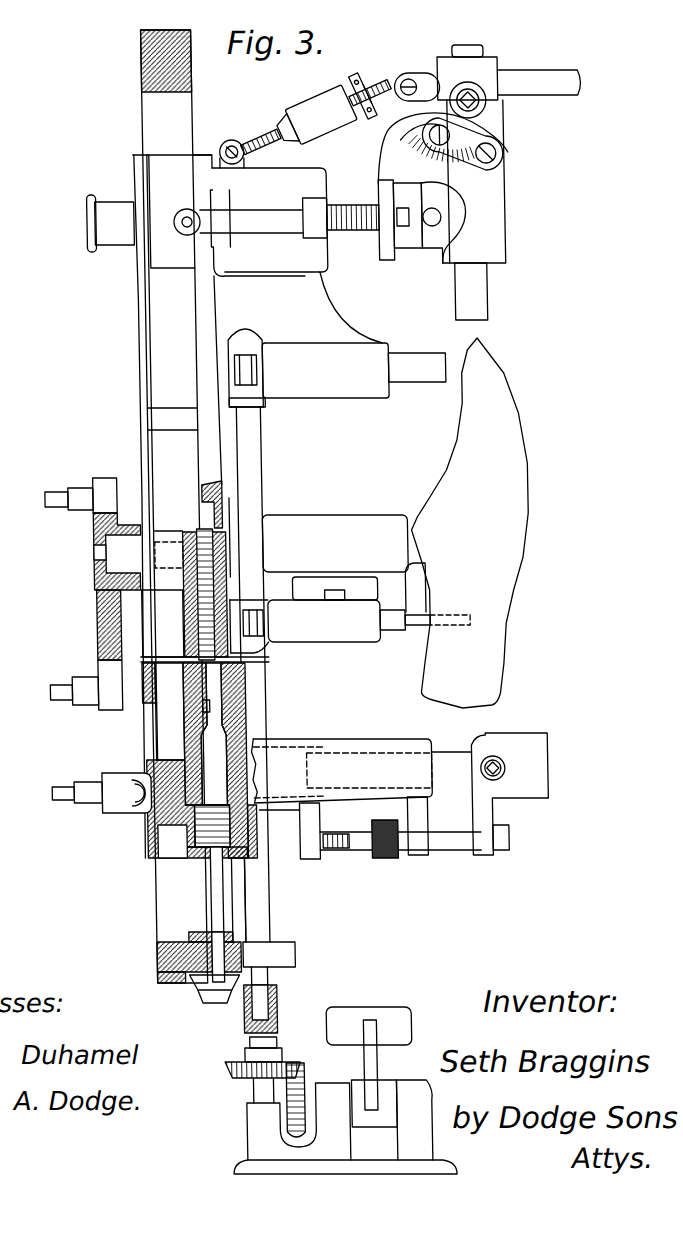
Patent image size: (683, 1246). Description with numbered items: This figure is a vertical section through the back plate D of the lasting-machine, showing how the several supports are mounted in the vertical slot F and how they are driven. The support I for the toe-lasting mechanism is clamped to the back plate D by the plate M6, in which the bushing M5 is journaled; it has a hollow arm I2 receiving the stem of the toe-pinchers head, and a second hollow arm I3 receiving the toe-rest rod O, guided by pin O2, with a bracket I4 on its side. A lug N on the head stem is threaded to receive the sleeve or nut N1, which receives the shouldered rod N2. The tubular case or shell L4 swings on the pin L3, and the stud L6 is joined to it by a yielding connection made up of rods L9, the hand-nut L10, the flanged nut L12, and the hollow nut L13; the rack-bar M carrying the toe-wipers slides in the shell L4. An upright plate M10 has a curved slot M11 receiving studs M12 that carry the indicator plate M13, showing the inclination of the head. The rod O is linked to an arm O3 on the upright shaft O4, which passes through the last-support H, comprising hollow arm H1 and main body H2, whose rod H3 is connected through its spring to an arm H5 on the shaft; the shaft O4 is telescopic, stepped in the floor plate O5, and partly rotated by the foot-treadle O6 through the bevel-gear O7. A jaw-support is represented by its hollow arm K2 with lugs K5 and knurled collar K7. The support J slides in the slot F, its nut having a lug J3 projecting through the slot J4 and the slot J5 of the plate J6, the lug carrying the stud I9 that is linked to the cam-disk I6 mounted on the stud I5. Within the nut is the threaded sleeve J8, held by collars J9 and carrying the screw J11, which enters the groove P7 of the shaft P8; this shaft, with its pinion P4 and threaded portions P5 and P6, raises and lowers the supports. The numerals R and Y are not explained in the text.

The back plate D is at (164, 506).
The vertical slot F is at (167, 83).
The bushing M5 is at (111, 223).
The plate M6 is at (141, 301).
The support or carrier I is at (290, 366).
The hollow arm I2 is at (270, 220).
The shouldered rod N2 is at (251, 220).
The hollow sleeve or nut N1 is at (341, 218).
The lug N is at (394, 220).
The stud L6 is at (229, 144).
The rods L9 is at (315, 117).
The hand-nut L10 is at (315, 118).
The hollow nut L13 is at (356, 92).
The flanged nut L12 is at (376, 83).
The arm R is at (538, 83).
The tubular case or shell L4 is at (443, 154).
The pin L3 is at (437, 217).
The plate M13 is at (470, 132).
The studs or screws M12 is at (494, 153).
The curved slot M11 is at (410, 134).
The upright plate M10 is at (442, 162).
The rack-bar M is at (471, 291).
The arm O3 is at (258, 382).
The second hollow arm I3 is at (325, 370).
The rod or stem O is at (417, 367).
The bracket I4 is at (258, 404).
The upright shaft O4 is at (256, 425).
The hollow arm K2 is at (335, 543).
The knurled collar K7 is at (338, 584).
The lugs K5 is at (404, 587).
The hollow arm H1 is at (324, 621).
The rod or stem H3 is at (384, 632).
The last-support H is at (269, 634).
The arm H5 is at (252, 630).
The threaded portion P6 is at (196, 532).
The main body H2 is at (163, 623).
The threaded portion P5 is at (182, 637).
The screw J11 is at (190, 704).
The longitudinal groove P7 is at (190, 722).
The collars or washers J9 is at (220, 870).
The slot J4 is at (160, 754).
The slot J5 is at (140, 777).
The lateral arm or lug J3 is at (173, 809).
The stud I9 is at (50, 800).
The plate J6 is at (132, 845).
The shaft P8 is at (195, 880).
The sleeve or tube J8 is at (180, 858).
The pinion P4 is at (180, 985).
The stud I5 is at (93, 534).
The plate or disk I6 is at (88, 592).
The support J is at (366, 799).
The bracket Y is at (519, 794).
The pin O2 is at (210, 1062).
The bevel-gear O7 is at (286, 1078).
The plate O5 is at (232, 1137).
The foot-treadle O6 is at (358, 1068).